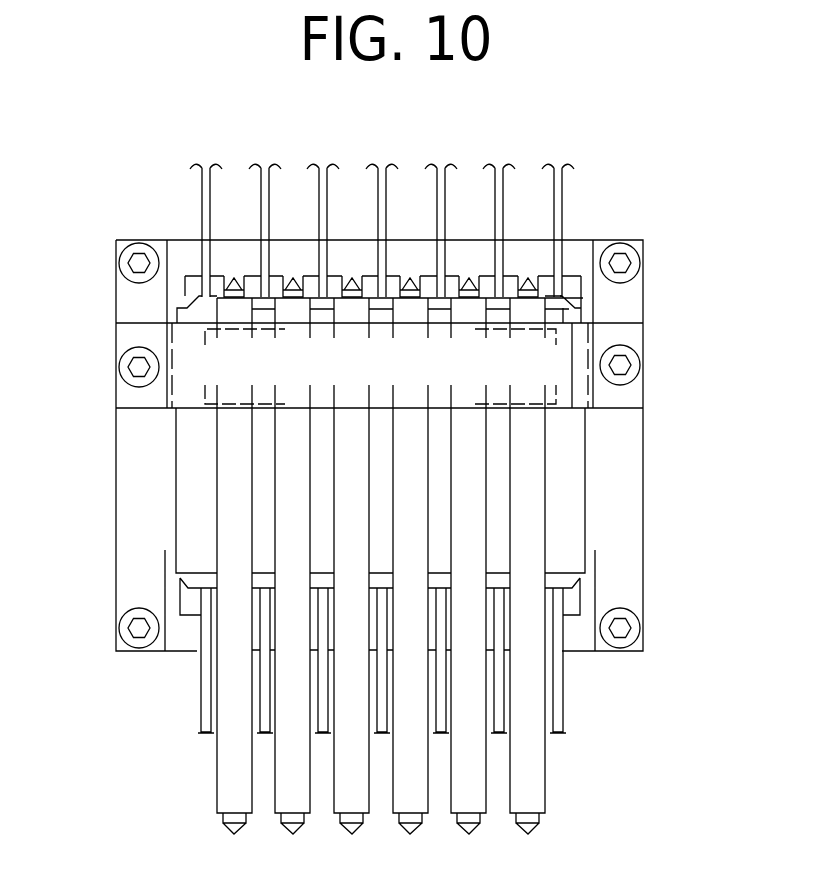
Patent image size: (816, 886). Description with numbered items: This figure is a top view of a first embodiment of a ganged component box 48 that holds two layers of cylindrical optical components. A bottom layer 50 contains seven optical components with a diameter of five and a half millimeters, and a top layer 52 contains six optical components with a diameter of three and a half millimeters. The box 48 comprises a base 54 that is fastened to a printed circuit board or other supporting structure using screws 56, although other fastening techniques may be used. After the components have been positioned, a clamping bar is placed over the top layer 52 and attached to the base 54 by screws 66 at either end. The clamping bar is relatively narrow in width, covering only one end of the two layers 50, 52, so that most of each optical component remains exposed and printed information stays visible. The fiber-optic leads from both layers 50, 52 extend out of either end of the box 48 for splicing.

The ganged component box 48 is at (84, 182).
The bottom layer of optical components 50 is at (575, 510).
The top layer of optical components 52 is at (537, 803).
The base 54 is at (579, 248).
The screws 56 is at (643, 254).
The screws 66 is at (643, 362).